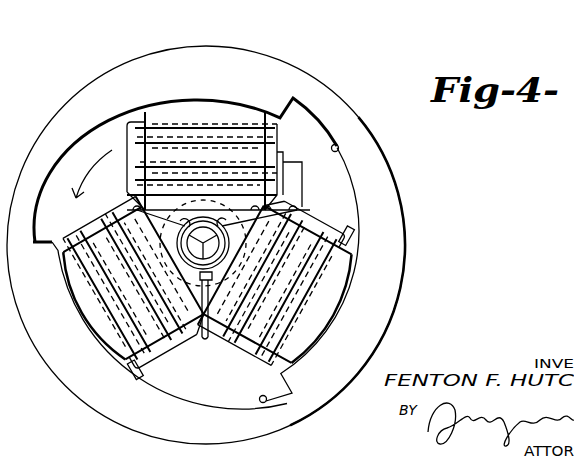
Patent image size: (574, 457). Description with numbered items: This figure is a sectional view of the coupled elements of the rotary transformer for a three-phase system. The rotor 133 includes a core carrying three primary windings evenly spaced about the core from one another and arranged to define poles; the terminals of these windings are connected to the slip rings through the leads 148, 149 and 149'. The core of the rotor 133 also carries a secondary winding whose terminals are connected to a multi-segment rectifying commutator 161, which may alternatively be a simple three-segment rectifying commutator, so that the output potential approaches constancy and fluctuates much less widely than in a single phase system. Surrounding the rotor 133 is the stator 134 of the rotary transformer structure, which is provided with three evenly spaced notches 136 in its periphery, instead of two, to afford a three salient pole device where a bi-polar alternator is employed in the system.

The rotor 133 is at (188, 110).
The stator 134 is at (266, 54).
The notches 136 is at (338, 148).
The lead 148 is at (300, 218).
The lead 149 is at (210, 286).
The top pole coil 149' is at (202, 166).
The rectifying commutator 161 is at (208, 338).